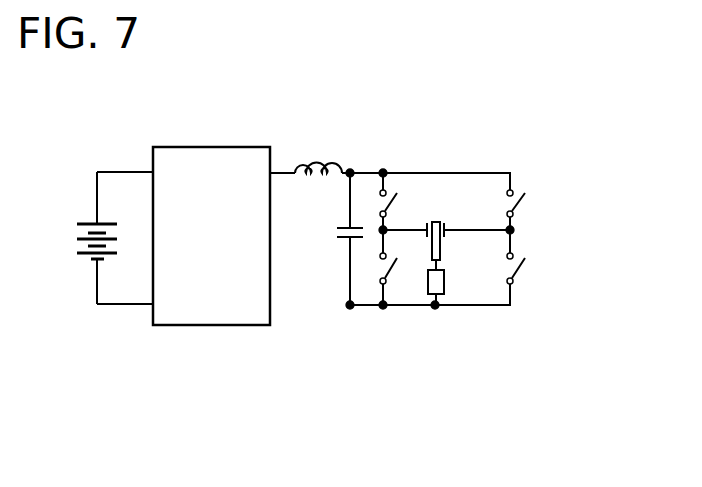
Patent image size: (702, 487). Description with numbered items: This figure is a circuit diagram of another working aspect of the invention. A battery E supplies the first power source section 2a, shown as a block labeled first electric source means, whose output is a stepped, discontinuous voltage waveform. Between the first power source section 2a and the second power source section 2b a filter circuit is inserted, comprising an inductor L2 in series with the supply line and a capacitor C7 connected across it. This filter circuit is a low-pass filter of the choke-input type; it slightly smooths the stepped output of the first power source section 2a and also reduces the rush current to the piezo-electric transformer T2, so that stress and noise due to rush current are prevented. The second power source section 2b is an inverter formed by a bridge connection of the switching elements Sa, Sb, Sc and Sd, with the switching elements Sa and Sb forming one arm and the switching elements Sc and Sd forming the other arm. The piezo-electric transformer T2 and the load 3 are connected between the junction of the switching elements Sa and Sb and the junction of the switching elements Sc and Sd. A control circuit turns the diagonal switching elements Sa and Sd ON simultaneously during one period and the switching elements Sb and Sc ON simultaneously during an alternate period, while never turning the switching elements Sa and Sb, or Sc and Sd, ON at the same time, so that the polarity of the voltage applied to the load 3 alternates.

The battery (power source) E is at (105, 238).
The first power source section 2a is at (244, 147).
The second power source section 2b is at (461, 221).
The inductor L2 is at (310, 150).
The capacitor C7 is at (327, 239).
The switching element Sa is at (411, 201).
The switching element Sb is at (397, 257).
The switching element Sc is at (539, 210).
The switching element Sd is at (539, 261).
The piezo-electric transformer T2 is at (437, 222).
The load 3 is at (444, 281).